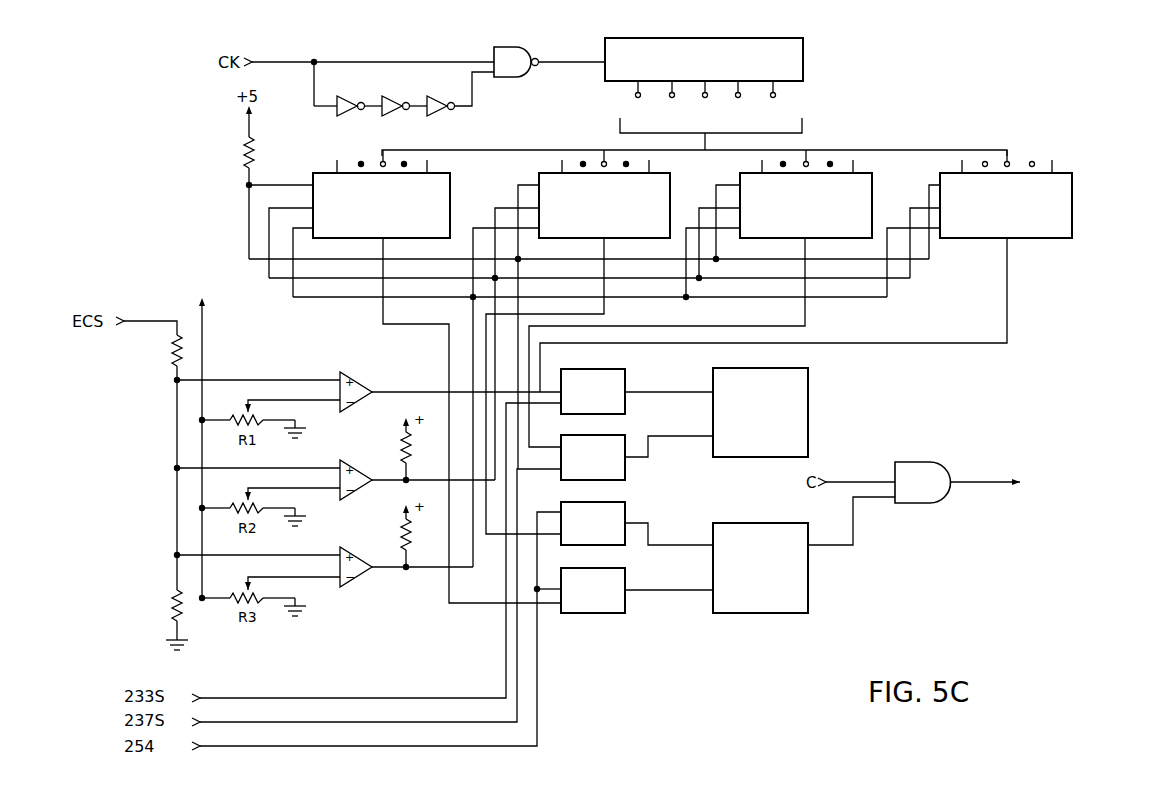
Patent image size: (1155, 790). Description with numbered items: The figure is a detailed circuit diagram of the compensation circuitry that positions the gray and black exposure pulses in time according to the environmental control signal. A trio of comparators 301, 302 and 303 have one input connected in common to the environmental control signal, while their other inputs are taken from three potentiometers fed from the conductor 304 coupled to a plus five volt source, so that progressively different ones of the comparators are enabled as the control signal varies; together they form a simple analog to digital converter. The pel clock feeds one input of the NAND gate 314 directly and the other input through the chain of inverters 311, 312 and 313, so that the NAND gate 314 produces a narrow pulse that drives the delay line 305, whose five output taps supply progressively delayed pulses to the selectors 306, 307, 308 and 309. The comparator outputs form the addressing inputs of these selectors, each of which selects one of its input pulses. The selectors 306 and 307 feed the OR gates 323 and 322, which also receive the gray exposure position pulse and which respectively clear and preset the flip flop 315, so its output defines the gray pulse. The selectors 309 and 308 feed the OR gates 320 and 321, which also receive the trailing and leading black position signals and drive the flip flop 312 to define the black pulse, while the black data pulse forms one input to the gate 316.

The comparator 301 is at (347, 376).
The comparator 302 is at (347, 464).
The comparator 303 is at (347, 551).
The conductor 304 is at (203, 356).
The delay line 305 is at (745, 38).
The selector 306 is at (449, 194).
The selector 307 is at (670, 194).
The selector 308 is at (872, 194).
The selector 309 is at (1072, 194).
The inverter 311 is at (346, 92).
The inverter / flip flop 312 is at (392, 92).
The inverter 313 is at (437, 92).
The NAND gate 314 is at (508, 49).
The flip flop 315 is at (808, 600).
The gate 316 is at (934, 462).
The OR gate 320 is at (620, 370).
The OR gate 321 is at (627, 470).
The OR gate 322 is at (627, 510).
The OR gate 323 is at (627, 608).